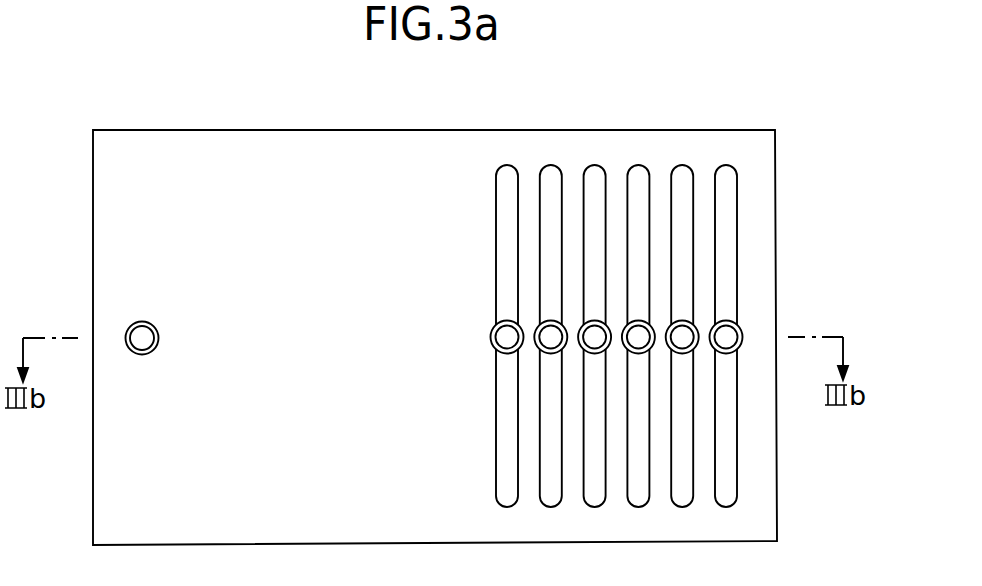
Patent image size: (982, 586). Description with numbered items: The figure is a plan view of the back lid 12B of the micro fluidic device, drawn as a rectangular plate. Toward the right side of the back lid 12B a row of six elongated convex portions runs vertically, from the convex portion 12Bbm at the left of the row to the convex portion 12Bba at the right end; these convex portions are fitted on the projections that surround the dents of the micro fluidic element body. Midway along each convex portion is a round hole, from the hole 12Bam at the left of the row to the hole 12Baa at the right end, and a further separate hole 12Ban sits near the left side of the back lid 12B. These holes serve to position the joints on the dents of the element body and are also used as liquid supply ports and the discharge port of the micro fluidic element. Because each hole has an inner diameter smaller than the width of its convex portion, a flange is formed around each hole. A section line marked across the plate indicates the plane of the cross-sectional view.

The back lid 12B is at (290, 130).
The convex portion 12Bbm is at (505, 177).
The convex portion 12Bba is at (723, 173).
The hole 12Bam is at (503, 338).
The hole 12Baa is at (725, 337).
The hole 12Ban is at (143, 340).